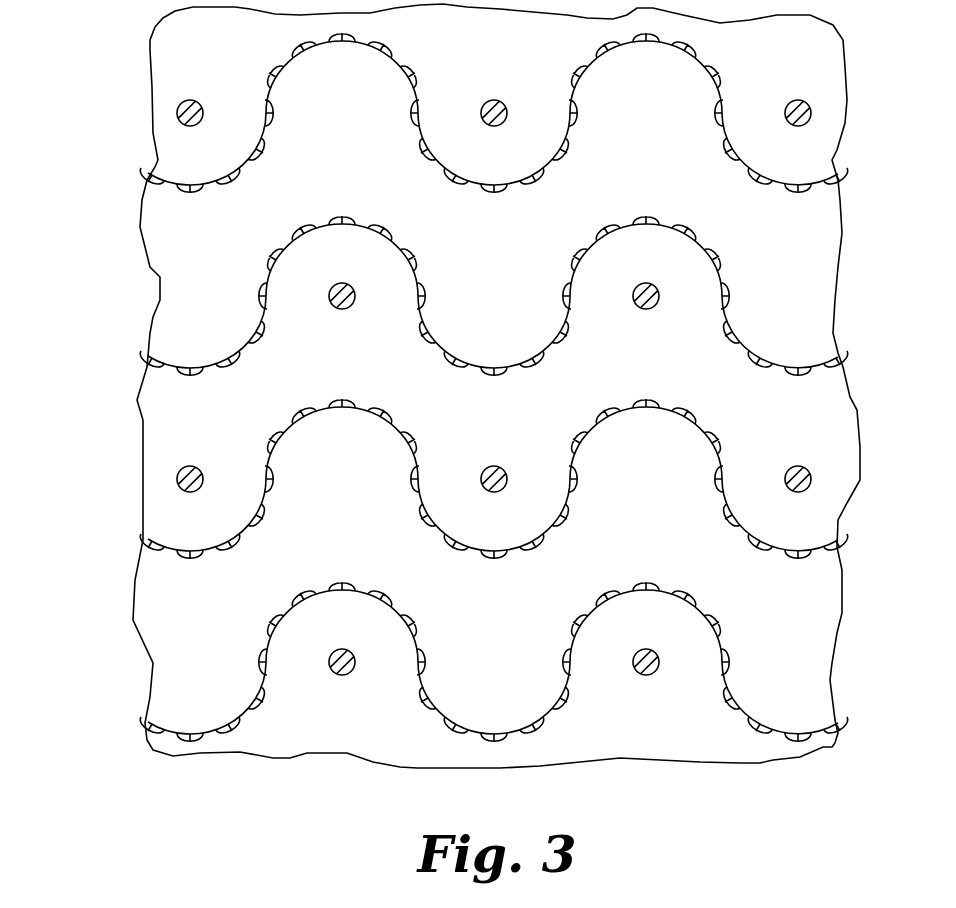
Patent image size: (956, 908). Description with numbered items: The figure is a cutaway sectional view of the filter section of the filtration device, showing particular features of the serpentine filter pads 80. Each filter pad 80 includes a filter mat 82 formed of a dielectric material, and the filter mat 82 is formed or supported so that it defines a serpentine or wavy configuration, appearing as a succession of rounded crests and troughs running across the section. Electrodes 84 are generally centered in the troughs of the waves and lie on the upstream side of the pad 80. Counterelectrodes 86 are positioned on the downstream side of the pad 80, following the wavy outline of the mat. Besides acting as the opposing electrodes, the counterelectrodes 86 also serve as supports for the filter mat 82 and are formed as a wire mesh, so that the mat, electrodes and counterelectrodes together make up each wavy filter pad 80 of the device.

The serpentine filter pad 80 is at (126, 123).
The filter mat 82 is at (267, 98).
The electrode 84 is at (500, 103).
The counterelectrode 86 is at (717, 112).